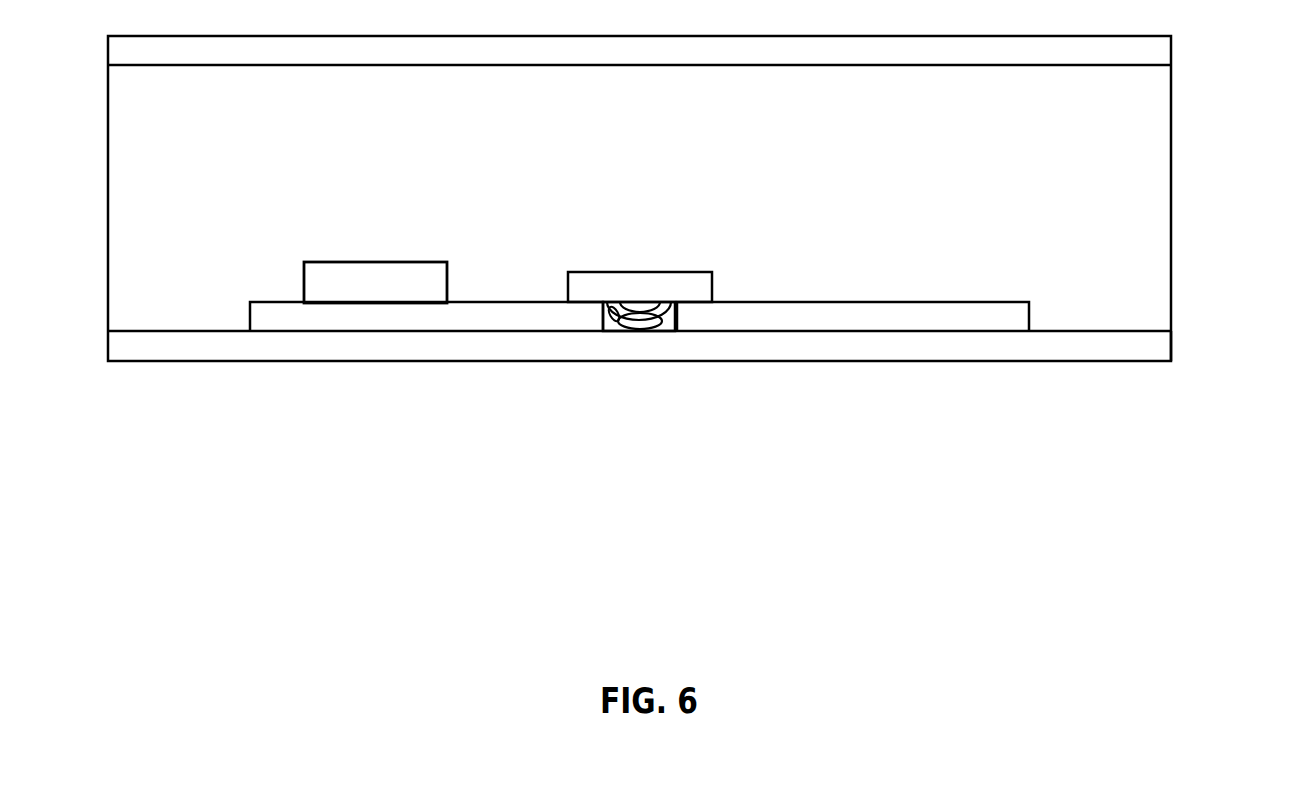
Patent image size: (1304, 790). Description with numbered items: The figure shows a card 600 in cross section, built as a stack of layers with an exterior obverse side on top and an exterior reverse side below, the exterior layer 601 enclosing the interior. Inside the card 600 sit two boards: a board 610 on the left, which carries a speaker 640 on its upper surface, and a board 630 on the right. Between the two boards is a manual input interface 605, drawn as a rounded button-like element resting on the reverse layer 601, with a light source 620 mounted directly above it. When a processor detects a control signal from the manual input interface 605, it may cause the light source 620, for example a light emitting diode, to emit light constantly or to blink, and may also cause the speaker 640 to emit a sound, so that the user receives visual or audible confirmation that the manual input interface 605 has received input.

The card 600 is at (1255, 216).
The layer 601 is at (1171, 350).
The manual input interface 605 is at (616, 312).
The board 610 is at (250, 313).
The light source 620 is at (590, 274).
The board 630 is at (876, 301).
The speaker 640 is at (327, 262).